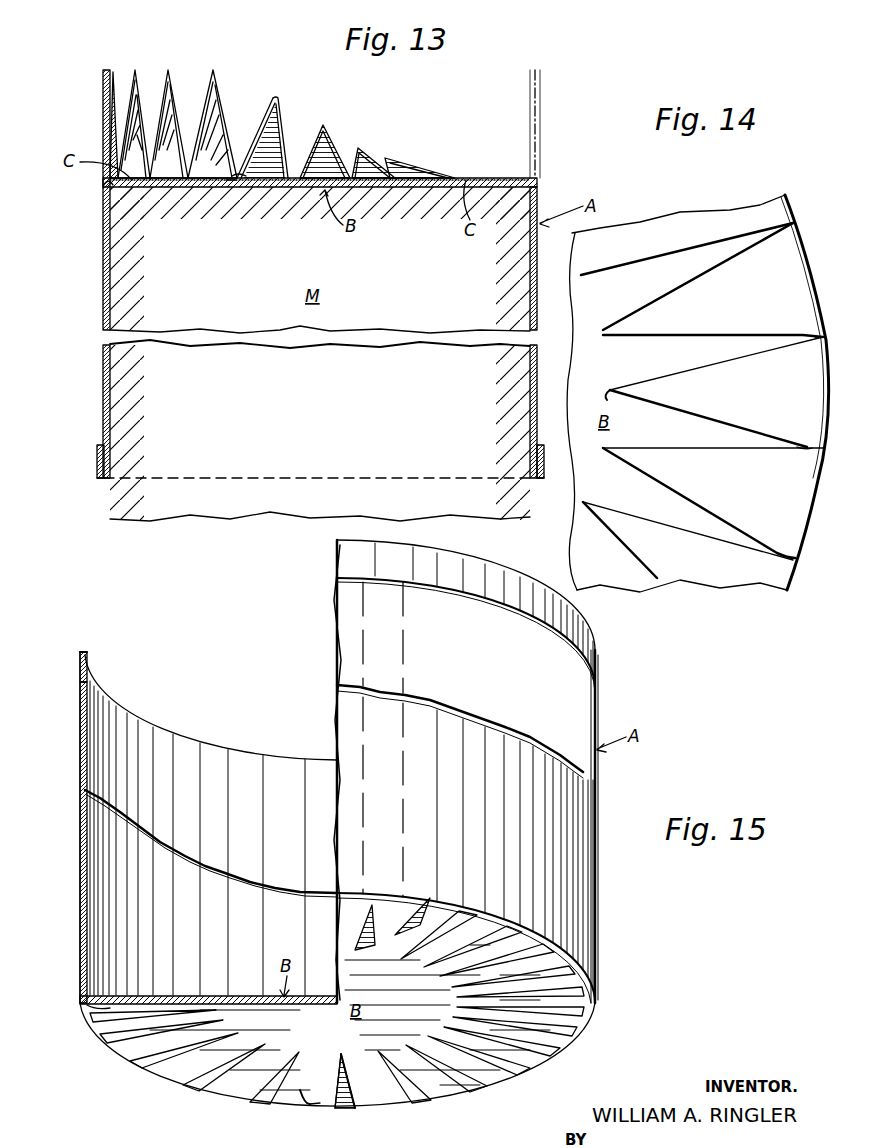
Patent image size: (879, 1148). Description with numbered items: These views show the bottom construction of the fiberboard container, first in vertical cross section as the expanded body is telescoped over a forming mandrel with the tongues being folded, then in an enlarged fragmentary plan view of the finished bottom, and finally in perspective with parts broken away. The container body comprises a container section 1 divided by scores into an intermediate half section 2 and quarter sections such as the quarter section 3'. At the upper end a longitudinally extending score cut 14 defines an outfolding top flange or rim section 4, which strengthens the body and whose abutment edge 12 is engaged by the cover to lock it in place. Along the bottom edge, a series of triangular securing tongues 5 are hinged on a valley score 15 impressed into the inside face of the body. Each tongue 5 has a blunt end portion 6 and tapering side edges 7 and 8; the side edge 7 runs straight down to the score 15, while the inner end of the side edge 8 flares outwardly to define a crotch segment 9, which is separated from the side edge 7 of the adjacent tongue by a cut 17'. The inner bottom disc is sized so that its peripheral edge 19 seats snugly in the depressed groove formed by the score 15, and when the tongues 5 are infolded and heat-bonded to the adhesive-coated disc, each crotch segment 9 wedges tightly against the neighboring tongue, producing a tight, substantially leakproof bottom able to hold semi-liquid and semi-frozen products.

In FIG. 13, the container section 1 is at (93, 270).
In FIG. 15, the container section 1 is at (75, 770).
In FIG. 13, the intermediate half section 2 is at (538, 288).
In FIG. 15, the intermediate half section 2 is at (466, 771).
In FIG. 15, the quarter section 3' is at (67, 827).
In FIG. 13, the outfolding top flange or rim section 4 is at (97, 471).
In FIG. 15, the outfolding top flange or rim section 4 is at (79, 673).
In FIG. 13, the securing tongues 5 is at (103, 90).
In FIG. 14, the securing tongues 5 is at (702, 400).
In FIG. 15, the securing tongues 5 is at (388, 910).
In FIG. 13, the blunt end portion 6 is at (277, 100).
In FIG. 14, the blunt end portion 6 is at (610, 388).
In FIG. 15, the blunt end portion 6 is at (345, 1075).
In FIG. 13, the side edge 7 is at (255, 165).
In FIG. 14, the side edge 7 is at (713, 351).
In FIG. 15, the side edge 7 is at (362, 1075).
In FIG. 13, the side edge 8 is at (283, 126).
In FIG. 14, the side edge 8 is at (686, 340).
In FIG. 15, the side edge 8 is at (300, 1075).
In FIG. 13, the crotch segment 9 is at (276, 180).
In FIG. 14, the crotch segment 9 is at (808, 335).
In FIG. 15, the crotch segment 9 is at (300, 1105).
In FIG. 13, the abutment edge 12 is at (100, 446).
In FIG. 15, the abutment edge 12 is at (79, 694).
In FIG. 13, the score cut 14 is at (103, 480).
In FIG. 15, the score cut 14 is at (84, 652).
In FIG. 13, the score 15 is at (103, 188).
In FIG. 15, the score 15 is at (82, 1003).
In FIG. 13, the cut 17' is at (223, 212).
In FIG. 14, the cut 17' is at (804, 354).
In FIG. 15, the cut 17' is at (352, 1125).
In FIG. 13, the peripheral edge 19 is at (103, 185).
In FIG. 15, the peripheral edge 19 is at (88, 1010).